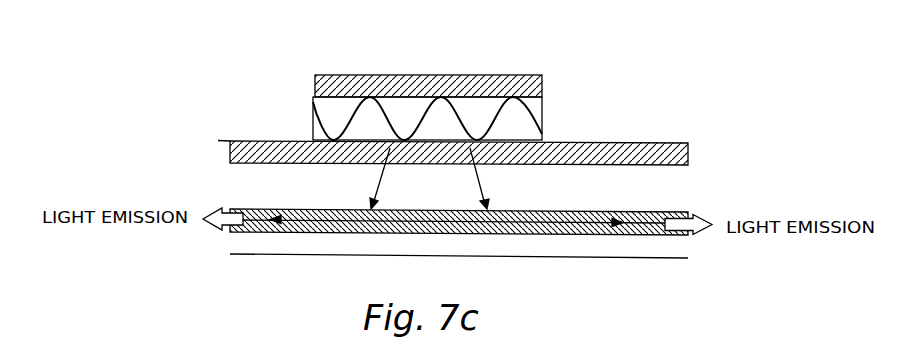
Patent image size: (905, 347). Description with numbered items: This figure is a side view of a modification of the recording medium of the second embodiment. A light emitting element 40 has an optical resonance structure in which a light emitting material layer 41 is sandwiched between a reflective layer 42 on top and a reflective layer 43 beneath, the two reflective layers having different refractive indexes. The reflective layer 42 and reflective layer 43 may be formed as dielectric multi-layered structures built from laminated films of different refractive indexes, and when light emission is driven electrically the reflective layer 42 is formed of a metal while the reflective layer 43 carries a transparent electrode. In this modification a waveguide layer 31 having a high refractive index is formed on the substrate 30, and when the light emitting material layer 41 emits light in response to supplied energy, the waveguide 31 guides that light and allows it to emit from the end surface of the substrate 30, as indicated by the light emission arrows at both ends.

The light emitting element 40 is at (457, 81).
The reflective layer 42 is at (543, 92).
The light emitting material layer 41 is at (522, 75).
The reflective layer 43 is at (690, 153).
The waveguide layer 31 is at (673, 208).
The substrate 30 is at (665, 262).